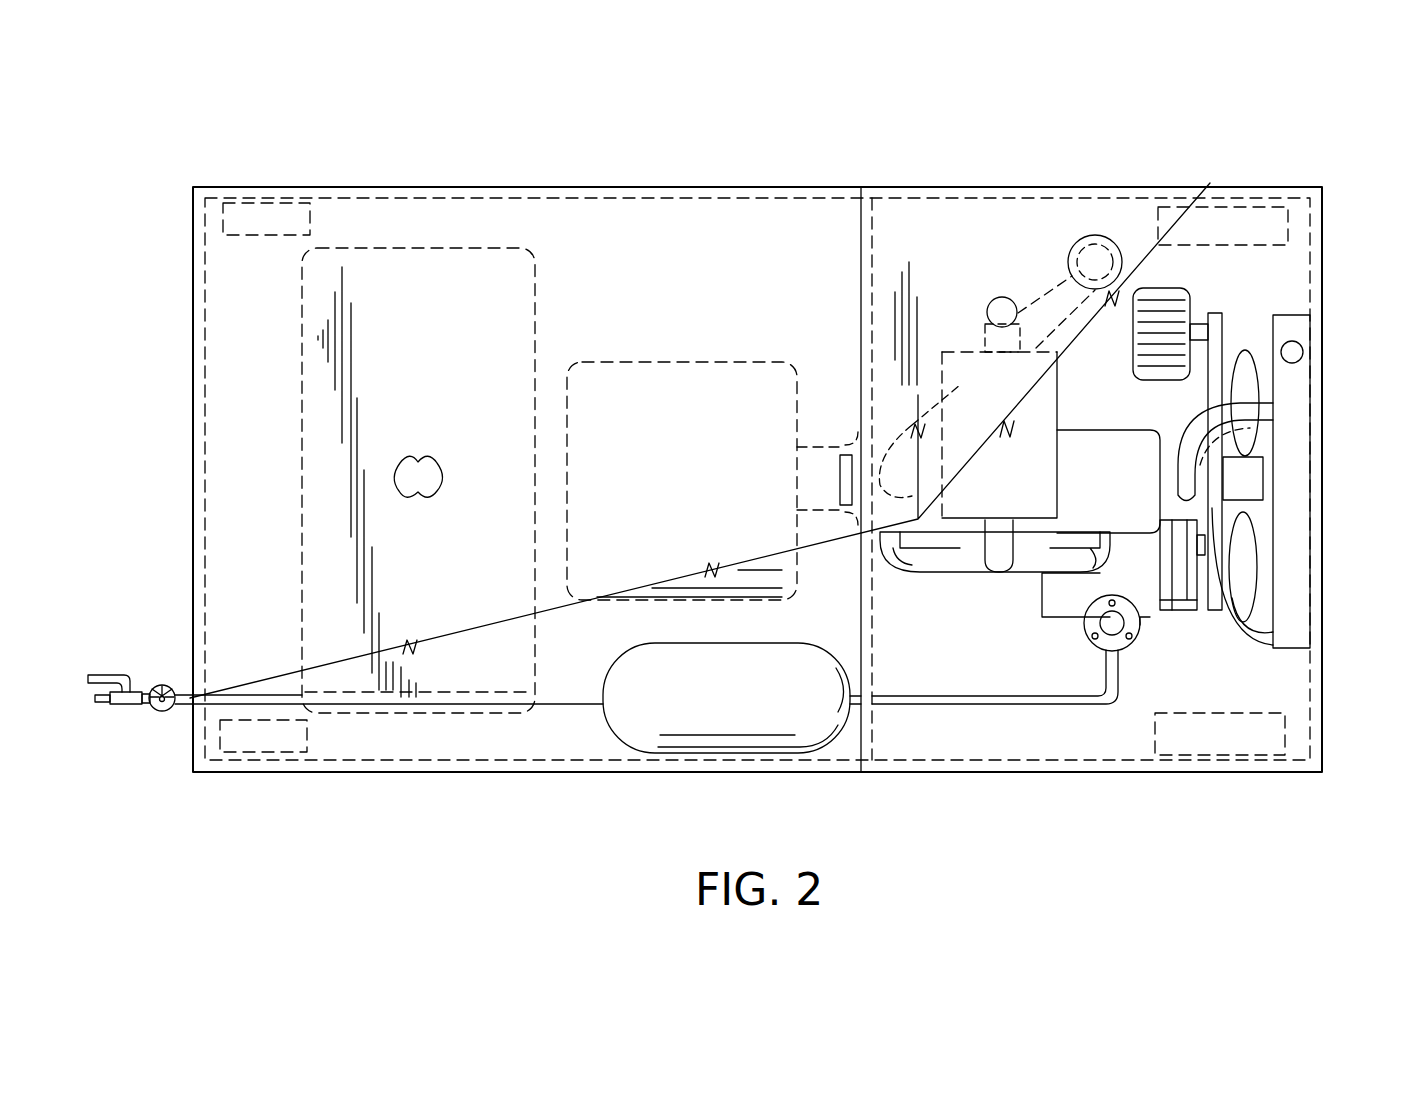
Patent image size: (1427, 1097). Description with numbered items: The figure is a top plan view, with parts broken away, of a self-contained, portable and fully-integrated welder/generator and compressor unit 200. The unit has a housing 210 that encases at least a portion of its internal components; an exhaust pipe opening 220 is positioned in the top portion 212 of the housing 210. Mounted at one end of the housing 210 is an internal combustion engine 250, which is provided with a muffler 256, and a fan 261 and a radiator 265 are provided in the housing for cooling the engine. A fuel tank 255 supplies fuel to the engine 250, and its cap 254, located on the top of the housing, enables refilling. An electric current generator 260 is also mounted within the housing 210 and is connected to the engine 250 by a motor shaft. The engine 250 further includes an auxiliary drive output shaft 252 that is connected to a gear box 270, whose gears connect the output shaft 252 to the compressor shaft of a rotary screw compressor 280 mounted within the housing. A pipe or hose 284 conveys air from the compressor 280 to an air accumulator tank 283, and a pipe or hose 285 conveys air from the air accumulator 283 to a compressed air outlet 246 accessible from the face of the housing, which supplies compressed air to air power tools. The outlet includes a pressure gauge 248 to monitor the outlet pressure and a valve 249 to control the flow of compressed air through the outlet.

The welder/generator and compressor unit 200 is at (780, 178).
The housing 210 is at (366, 185).
The top portion 212 is at (237, 312).
The exhaust pipe opening 220 is at (1005, 296).
The compressed air outlet 246 is at (125, 704).
The pressure gauge 248 is at (162, 711).
The valve 249 is at (108, 676).
The internal combustion engine 250 is at (1073, 525).
The auxiliary drive output shaft 252 is at (1165, 478).
The cap 254 is at (422, 458).
The fuel tank 255 is at (492, 680).
The muffler 256 is at (1038, 405).
The electric current generator 260 is at (787, 563).
The fan 261 is at (1250, 572).
The radiator 265 is at (1300, 400).
The gear box 270 is at (1182, 597).
The rotary screw compressor 280 is at (1145, 607).
The air accumulator tank 283 is at (733, 727).
The pipe or hose 284 is at (1047, 704).
The pipe or hose 285 is at (275, 697).